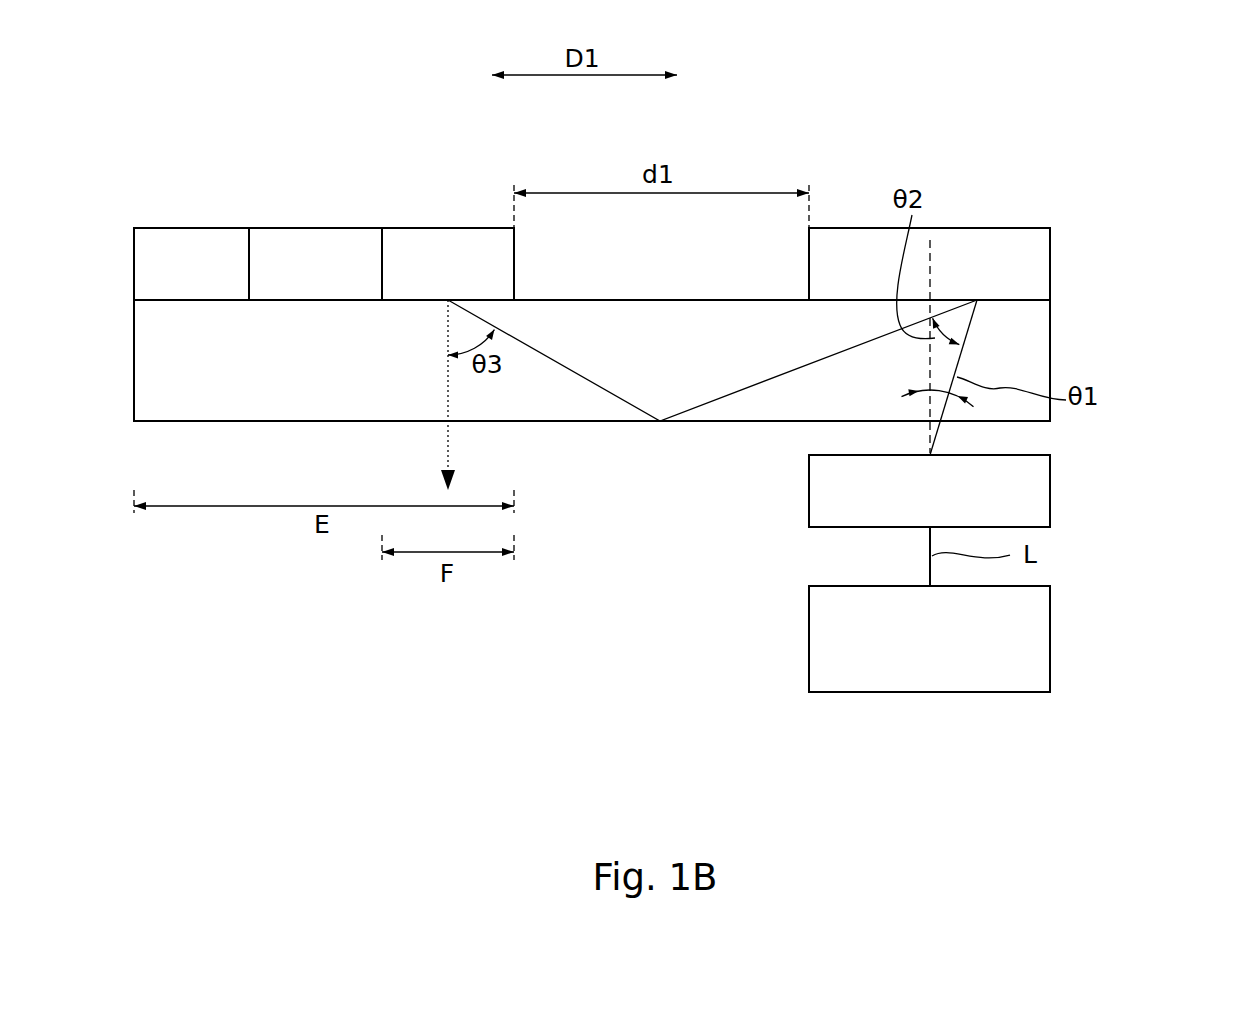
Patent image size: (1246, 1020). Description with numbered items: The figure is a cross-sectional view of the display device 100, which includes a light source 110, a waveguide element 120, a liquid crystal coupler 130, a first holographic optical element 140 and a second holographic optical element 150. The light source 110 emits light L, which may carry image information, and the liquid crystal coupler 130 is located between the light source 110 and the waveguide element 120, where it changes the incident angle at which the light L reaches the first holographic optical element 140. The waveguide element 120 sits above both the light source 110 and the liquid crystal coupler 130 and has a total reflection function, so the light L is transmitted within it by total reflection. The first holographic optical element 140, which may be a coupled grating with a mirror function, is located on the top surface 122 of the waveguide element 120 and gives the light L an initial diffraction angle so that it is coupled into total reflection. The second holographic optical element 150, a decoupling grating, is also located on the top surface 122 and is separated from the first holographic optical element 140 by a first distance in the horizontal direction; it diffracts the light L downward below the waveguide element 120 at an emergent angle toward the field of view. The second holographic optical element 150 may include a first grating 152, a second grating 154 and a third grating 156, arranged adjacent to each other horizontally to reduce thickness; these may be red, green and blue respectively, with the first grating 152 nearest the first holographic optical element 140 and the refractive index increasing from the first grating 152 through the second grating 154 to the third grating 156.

The display device 100 is at (1234, 75).
The light source 110 is at (1042, 648).
The waveguide element 120 is at (1042, 371).
The top surface 122 is at (865, 280).
The liquid crystal coupler 130 is at (1042, 494).
The first holographic optical element 140 is at (1042, 264).
The second holographic optical element 150 is at (324, 199).
The first grating 152 is at (448, 222).
The second grating 154 is at (320, 240).
The third grating 156 is at (192, 240).